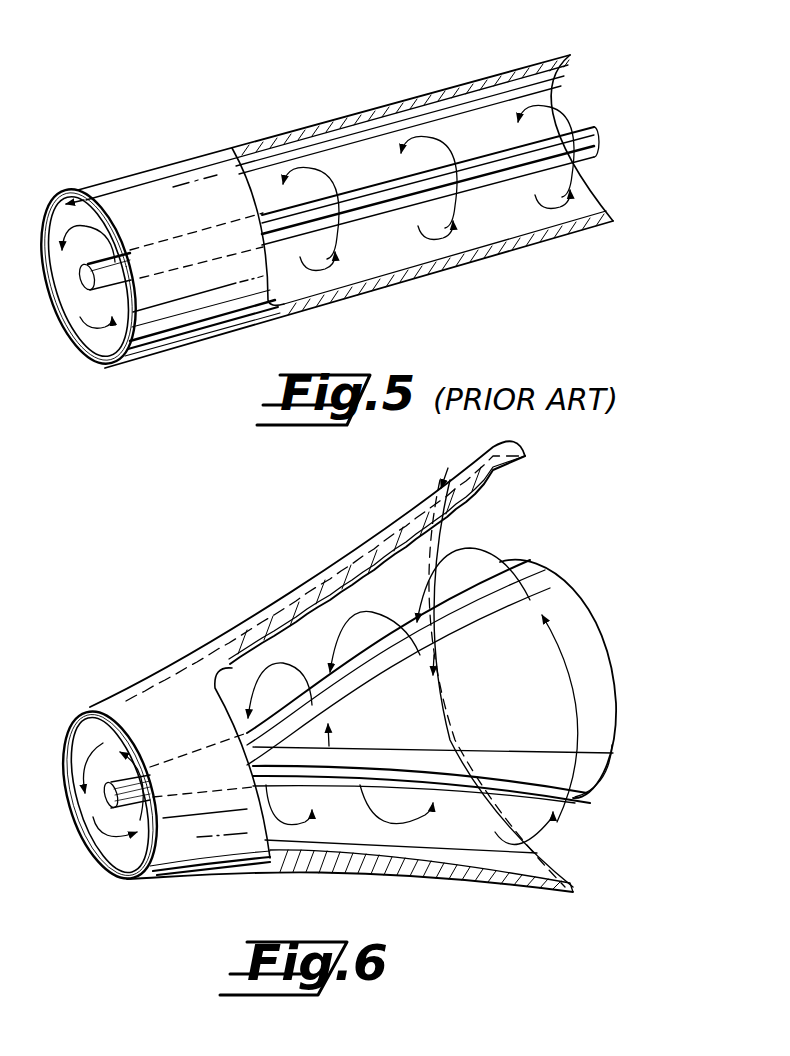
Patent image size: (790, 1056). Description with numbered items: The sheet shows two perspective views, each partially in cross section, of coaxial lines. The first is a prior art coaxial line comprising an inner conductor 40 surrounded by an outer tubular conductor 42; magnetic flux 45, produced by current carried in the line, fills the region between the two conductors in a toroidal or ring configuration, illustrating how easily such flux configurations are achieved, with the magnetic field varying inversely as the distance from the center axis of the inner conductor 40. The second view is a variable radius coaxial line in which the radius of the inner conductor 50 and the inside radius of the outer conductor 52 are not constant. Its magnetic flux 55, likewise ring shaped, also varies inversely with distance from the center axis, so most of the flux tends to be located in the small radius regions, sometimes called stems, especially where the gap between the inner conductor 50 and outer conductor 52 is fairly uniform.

In FIG. 5, the inner conductor 40 is at (578, 130).
In FIG. 5, the outer tubular conductor 42 is at (503, 73).
In FIG. 5, the magnetic flux 45 is at (560, 123).
In FIG. 6, the inner conductor 50 is at (587, 607).
In FIG. 6, the outer conductor 52 is at (344, 556).
In FIG. 6, the magnetic flux 55 is at (497, 548).